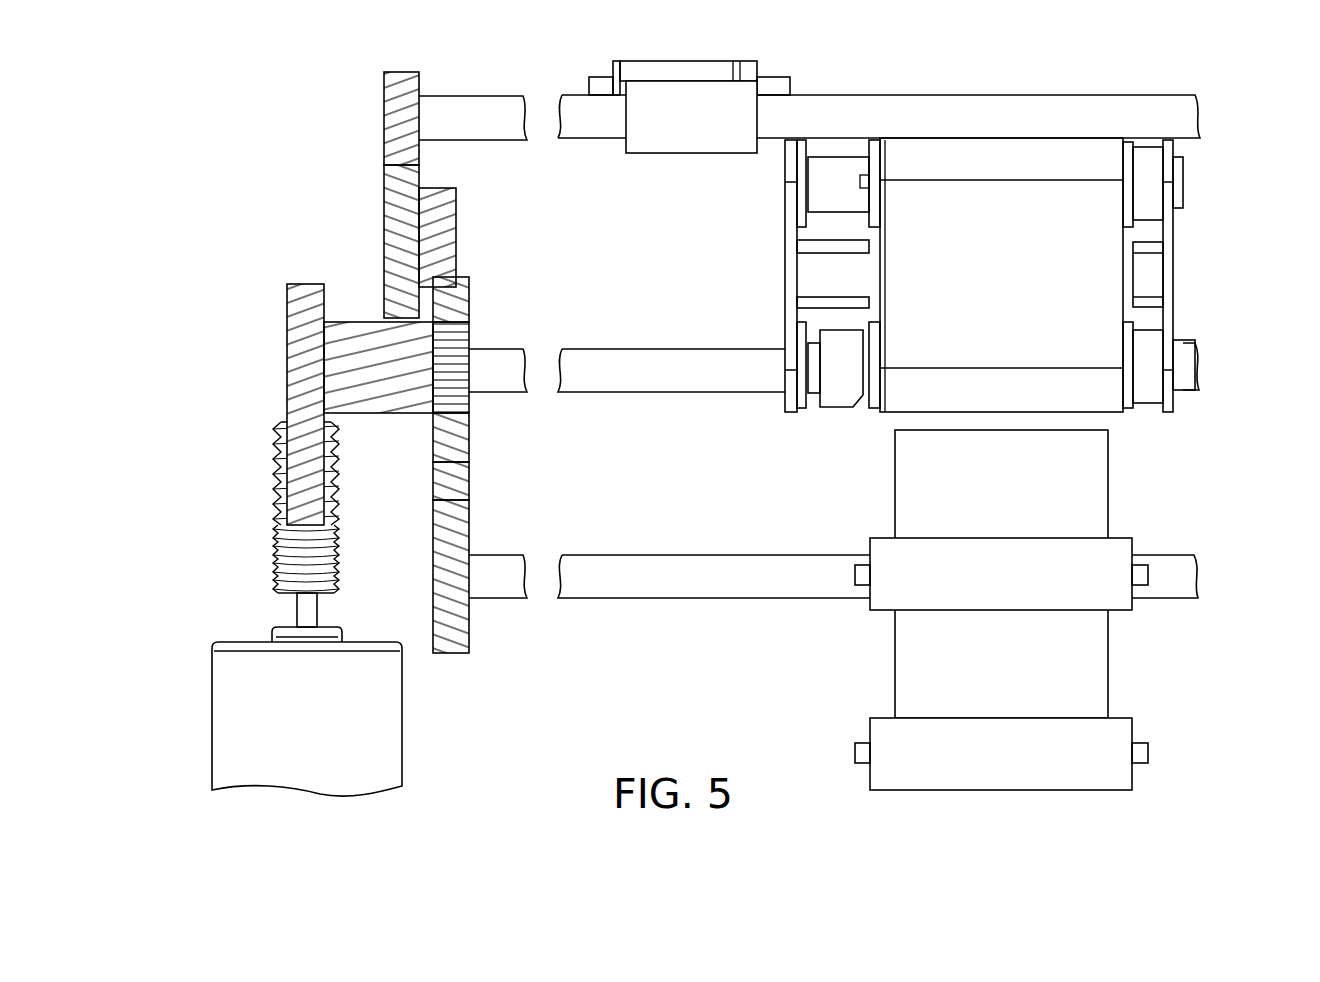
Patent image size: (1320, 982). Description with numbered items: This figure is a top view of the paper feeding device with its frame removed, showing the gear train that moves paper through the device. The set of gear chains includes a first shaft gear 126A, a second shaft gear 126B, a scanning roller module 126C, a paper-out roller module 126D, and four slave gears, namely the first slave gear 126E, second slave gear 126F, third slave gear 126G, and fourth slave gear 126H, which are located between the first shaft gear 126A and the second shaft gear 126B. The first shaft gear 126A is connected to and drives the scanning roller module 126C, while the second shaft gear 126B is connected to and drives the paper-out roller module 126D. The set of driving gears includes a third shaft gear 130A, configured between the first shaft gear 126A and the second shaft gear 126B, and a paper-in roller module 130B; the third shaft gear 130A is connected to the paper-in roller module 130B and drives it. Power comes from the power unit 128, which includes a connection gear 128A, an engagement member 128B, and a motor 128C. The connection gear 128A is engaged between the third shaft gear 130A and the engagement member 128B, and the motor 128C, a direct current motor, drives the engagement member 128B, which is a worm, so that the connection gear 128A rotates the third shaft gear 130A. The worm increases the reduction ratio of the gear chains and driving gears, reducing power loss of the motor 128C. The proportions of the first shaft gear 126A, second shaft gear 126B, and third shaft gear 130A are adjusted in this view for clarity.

The first shaft gear 126A is at (465, 532).
The second shaft gear 126B is at (392, 99).
The scanning roller module 126C is at (1083, 650).
The paper-out roller module 126D is at (757, 55).
The first slave gear 126E is at (465, 423).
The second slave gear 126F is at (465, 469).
The third slave gear 126G is at (469, 306).
The fourth slave gear 126H is at (392, 225).
The power unit 128 is at (168, 485).
The connection gear 128A is at (300, 506).
The engagement member 128B is at (280, 553).
The motor 128C is at (258, 663).
The third shaft gear 130A is at (305, 341).
The paper-in roller module 130B is at (990, 193).